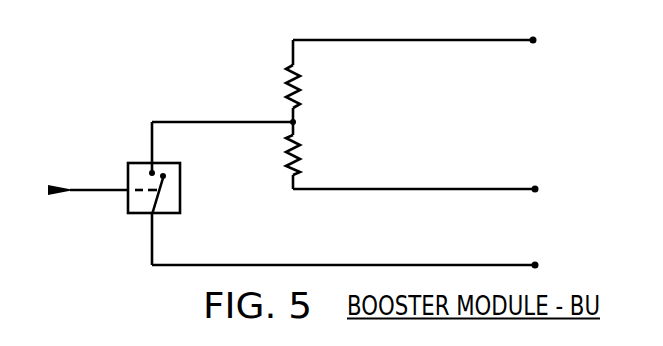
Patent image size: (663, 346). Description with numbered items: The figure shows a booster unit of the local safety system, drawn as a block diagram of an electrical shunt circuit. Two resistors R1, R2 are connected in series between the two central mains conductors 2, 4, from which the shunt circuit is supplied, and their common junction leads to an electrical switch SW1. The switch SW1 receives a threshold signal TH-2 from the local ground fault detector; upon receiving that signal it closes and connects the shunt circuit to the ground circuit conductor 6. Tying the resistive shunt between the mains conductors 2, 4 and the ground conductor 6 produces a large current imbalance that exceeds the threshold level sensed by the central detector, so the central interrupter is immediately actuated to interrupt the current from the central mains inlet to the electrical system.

The central mains conductor 2 is at (498, 40).
The central mains conductor 4 is at (505, 189).
The ground circuit conductor 6 is at (500, 265).
The resistor R1 is at (308, 86).
The resistor R2 is at (309, 155).
The electrical switch SW1 is at (180, 190).
The threshold signal TH-2 is at (88, 175).